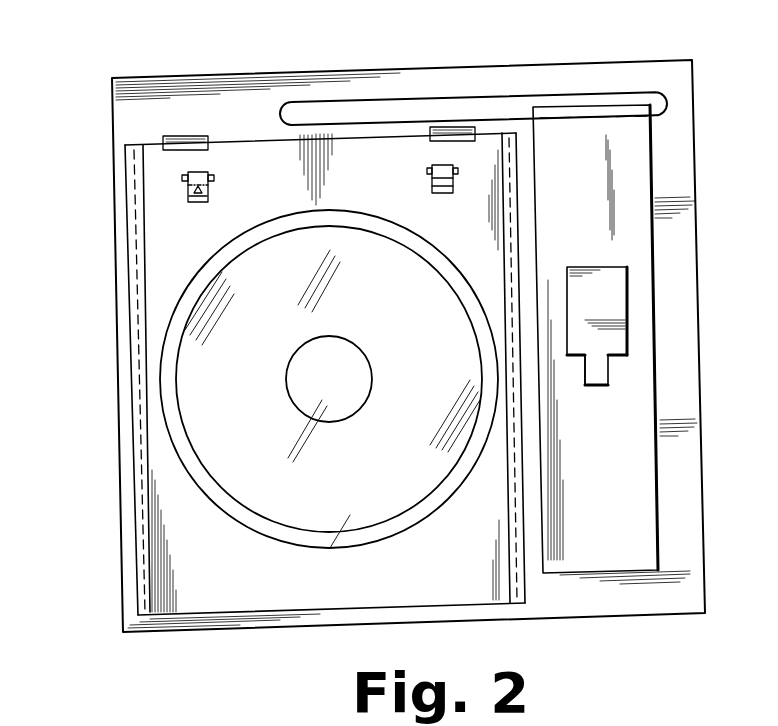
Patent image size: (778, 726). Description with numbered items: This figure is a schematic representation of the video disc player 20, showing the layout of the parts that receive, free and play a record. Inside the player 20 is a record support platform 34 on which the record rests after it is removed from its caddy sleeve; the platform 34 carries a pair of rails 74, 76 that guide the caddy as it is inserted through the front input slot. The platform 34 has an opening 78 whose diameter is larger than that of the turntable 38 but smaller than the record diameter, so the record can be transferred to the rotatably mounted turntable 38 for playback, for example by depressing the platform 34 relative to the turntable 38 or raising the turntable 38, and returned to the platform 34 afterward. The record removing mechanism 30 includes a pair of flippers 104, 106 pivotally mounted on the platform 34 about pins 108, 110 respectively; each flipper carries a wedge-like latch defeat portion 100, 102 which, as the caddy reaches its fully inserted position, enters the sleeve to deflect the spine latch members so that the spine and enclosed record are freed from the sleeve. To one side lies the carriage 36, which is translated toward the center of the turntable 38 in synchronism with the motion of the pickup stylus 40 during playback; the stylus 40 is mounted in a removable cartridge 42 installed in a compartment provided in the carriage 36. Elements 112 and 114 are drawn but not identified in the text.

The video disc player 20 is at (100, 126).
The record removing mechanism 30 is at (222, 168).
The record support platform 34 is at (196, 592).
The carriage 36 is at (652, 150).
The turntable 38 is at (192, 390).
The pickup stylus 40 is at (598, 371).
The removable cartridge 42 is at (618, 297).
The rail 74 is at (157, 495).
The rail 76 is at (510, 565).
The opening 78 is at (220, 503).
The latch defeat portion 100 is at (196, 205).
The latch defeat portion 102 is at (451, 192).
The flipper 104 is at (211, 190).
The flipper 106 is at (436, 188).
The pin 108 is at (183, 179).
The pin 110 is at (430, 169).
The sensor indicator 112 is at (204, 198).
The sensor base 114 is at (441, 195).